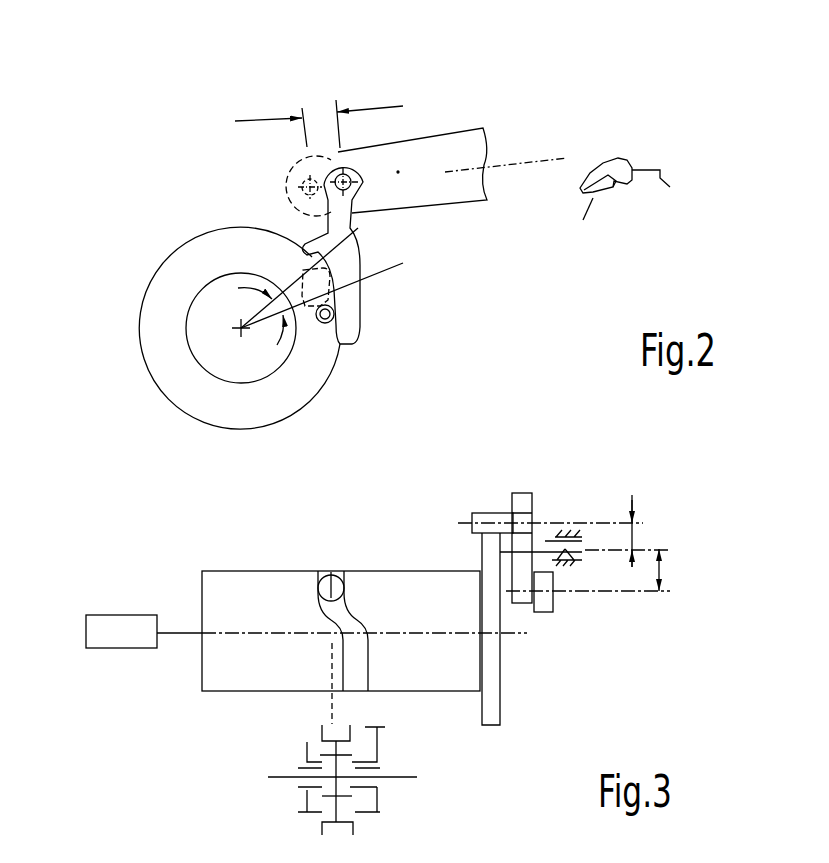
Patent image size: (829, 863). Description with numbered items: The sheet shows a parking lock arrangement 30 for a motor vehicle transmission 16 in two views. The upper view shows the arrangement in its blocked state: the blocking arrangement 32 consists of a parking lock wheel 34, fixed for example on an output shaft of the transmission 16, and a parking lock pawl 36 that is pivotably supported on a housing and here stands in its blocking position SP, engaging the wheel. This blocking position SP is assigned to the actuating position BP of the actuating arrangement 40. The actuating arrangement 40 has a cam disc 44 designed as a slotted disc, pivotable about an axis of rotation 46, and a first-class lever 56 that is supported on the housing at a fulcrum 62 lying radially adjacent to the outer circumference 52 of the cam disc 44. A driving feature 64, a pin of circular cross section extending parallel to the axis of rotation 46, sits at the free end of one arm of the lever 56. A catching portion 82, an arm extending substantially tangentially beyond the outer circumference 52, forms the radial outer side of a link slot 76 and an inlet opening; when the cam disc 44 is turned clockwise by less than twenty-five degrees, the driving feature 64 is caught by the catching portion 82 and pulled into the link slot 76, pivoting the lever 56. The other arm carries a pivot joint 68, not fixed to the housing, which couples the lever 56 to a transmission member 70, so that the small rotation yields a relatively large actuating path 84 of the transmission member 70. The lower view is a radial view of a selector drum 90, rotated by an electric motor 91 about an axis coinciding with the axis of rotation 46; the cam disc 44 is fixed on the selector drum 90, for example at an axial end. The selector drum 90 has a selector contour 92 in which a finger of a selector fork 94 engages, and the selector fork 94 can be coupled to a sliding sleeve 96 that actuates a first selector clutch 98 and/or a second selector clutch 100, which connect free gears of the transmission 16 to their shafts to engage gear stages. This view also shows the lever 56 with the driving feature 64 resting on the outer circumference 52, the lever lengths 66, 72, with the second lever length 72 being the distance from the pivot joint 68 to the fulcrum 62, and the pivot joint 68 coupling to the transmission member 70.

In FIG. 3, the transmission 16 is at (250, 538).
In FIG. 2, the parking lock arrangement 30 is at (648, 147).
In FIG. 2, the blocking arrangement 32 is at (690, 200).
In FIG. 2, the parking lock wheel 34 is at (622, 197).
In FIG. 2, the parking lock pawl 36 is at (616, 158).
In FIG. 2, the actuating arrangement 40 is at (562, 103).
In FIG. 3, the actuating arrangement 40 is at (570, 488).
In FIG. 2, the cam disc 44 is at (197, 228).
In FIG. 3, the cam disc 44 is at (493, 705).
In FIG. 3, the axis of rotation 46 is at (448, 627).
In FIG. 3, the outer circumference 52 is at (488, 730).
In FIG. 2, the lever 56 is at (356, 236).
In FIG. 3, the lever 56 is at (520, 498).
In FIG. 3, the fulcrum 62 is at (567, 554).
In FIG. 2, the driving feature 64 is at (333, 326).
In FIG. 3, the driving feature 64 is at (490, 508).
In FIG. 3, the lever length 66 is at (640, 535).
In FIG. 3, the pivot joint 68 is at (541, 591).
In FIG. 2, the transmission member 70 is at (438, 192).
In FIG. 3, the transmission member 70 is at (543, 602).
In FIG. 3, the second lever length 72 is at (660, 570).
In FIG. 2, the link slot 76 is at (282, 289).
In FIG. 2, the catching portion 82 is at (353, 316).
In FIG. 2, the actuating path 84 is at (367, 105).
In FIG. 3, the selector drum 90 is at (228, 612).
In FIG. 3, the electric motor 91 is at (108, 648).
In FIG. 3, the selector contour 92 is at (350, 623).
In FIG. 3, the selector fork 94 is at (333, 573).
In FIG. 3, the sliding sleeve 96 is at (342, 827).
In FIG. 3, the first selector clutch 98 is at (322, 799).
In FIG. 3, the second selector clutch 100 is at (360, 803).
In FIG. 2, the actuating position BP is at (446, 112).
In FIG. 2, the blocking position SP is at (693, 172).